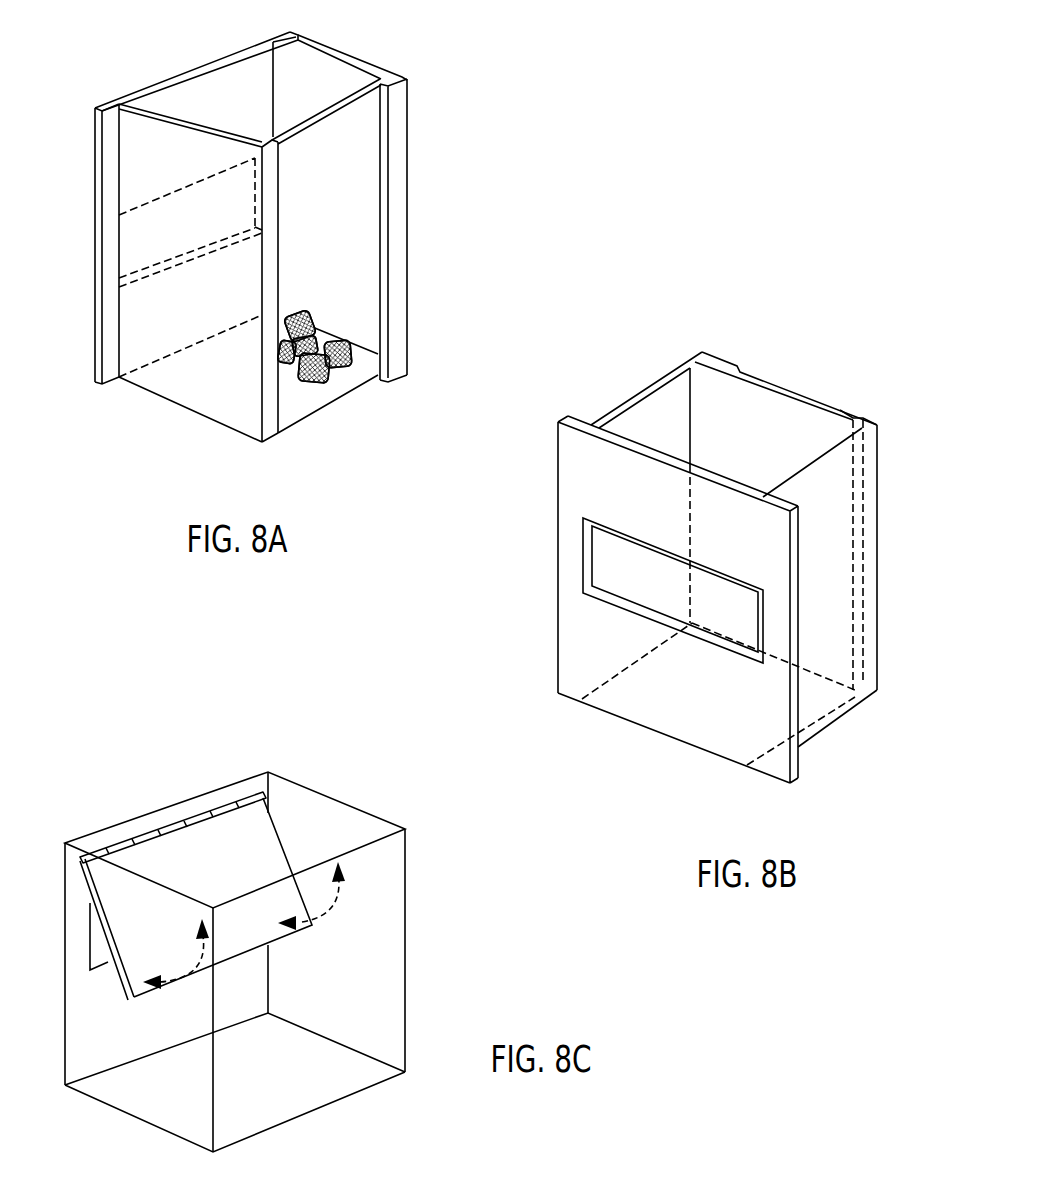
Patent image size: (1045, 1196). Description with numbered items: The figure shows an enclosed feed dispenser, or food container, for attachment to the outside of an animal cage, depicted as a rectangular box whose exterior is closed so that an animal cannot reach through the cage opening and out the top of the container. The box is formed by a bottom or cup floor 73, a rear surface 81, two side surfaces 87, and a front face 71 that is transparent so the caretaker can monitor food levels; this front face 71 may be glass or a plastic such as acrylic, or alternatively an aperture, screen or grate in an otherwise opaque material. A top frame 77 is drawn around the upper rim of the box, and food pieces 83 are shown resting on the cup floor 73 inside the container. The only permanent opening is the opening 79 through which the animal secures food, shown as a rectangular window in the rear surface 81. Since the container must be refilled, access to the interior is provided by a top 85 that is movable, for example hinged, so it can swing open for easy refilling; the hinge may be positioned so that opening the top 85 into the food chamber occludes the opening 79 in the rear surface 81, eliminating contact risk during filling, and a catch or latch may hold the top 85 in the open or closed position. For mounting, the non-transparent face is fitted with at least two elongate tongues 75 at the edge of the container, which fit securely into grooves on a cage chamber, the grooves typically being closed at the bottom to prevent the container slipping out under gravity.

In FIG. 8A, the front face 71 is at (378, 260).
In FIG. 8B, the front face 71 is at (729, 552).
In FIG. 8C, the front face 71 is at (249, 962).
In FIG. 8A, the cup floor 73 is at (339, 395).
In FIG. 8A, the elongate tongues 75 is at (68, 244).
In FIG. 8A, the top frame rail 77 is at (230, 89).
In FIG. 8B, the opening 79 is at (673, 664).
In FIG. 8B, the rear surface 81 is at (674, 603).
In FIG. 8A, the objects in box 83 is at (358, 365).
In FIG. 8C, the top 85 is at (244, 878).
In FIG. 8A, the side surfaces 87 is at (156, 304).